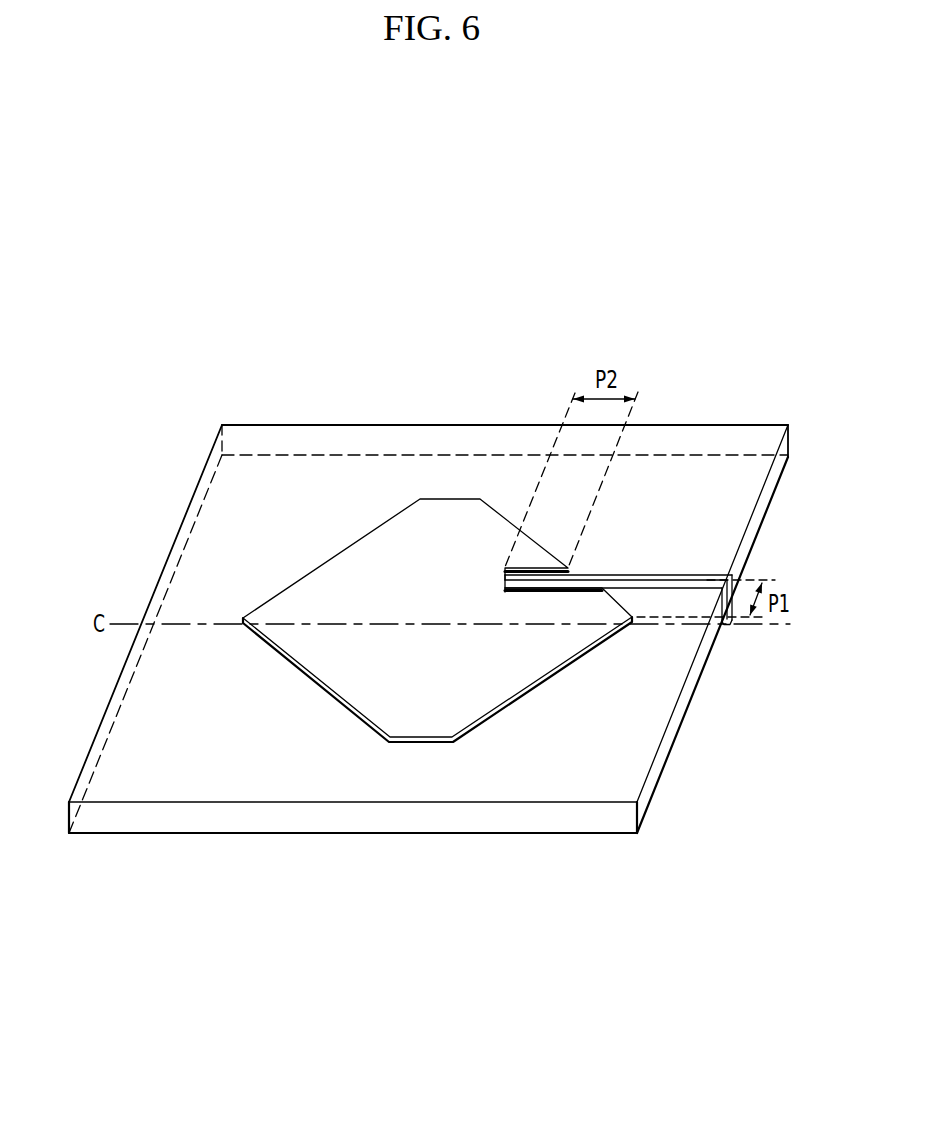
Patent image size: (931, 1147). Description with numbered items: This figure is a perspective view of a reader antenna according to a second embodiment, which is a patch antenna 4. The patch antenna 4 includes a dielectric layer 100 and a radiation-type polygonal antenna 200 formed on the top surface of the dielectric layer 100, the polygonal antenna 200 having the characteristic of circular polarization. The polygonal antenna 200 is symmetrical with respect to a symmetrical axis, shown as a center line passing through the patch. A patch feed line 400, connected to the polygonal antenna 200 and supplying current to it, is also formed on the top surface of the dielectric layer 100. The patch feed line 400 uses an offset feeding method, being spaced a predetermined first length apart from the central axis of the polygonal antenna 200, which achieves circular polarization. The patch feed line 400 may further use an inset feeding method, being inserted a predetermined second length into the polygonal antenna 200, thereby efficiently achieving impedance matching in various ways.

The patch antenna 4 is at (440, 344).
The dielectric layer 100 is at (675, 730).
The polygonal antenna 200 is at (340, 572).
The patch feed line 400 is at (669, 575).